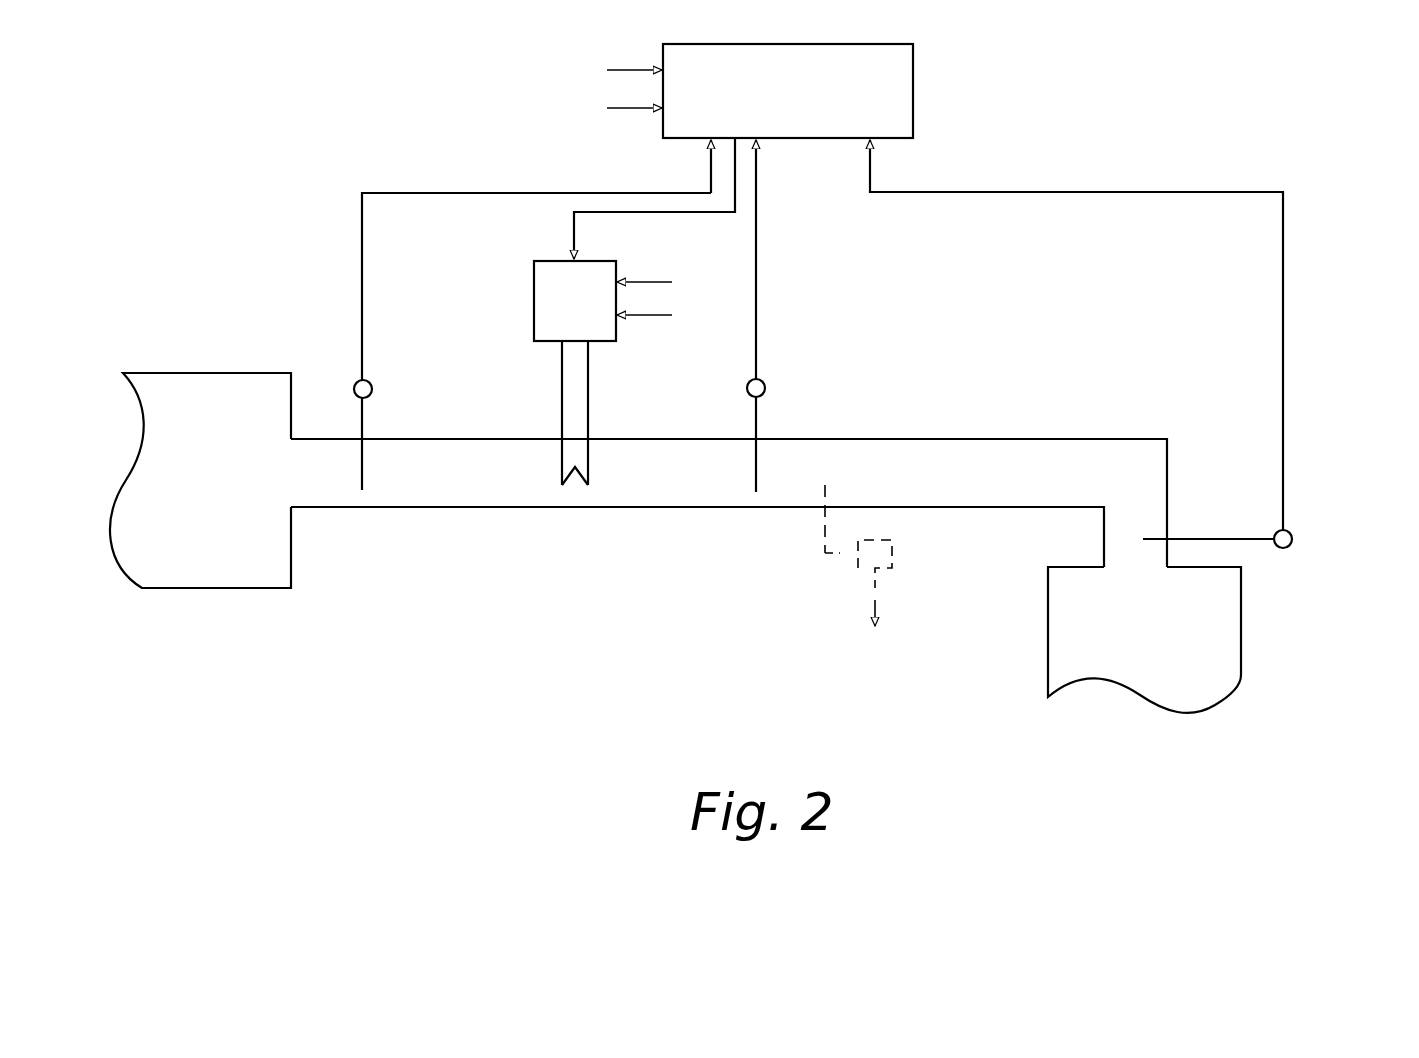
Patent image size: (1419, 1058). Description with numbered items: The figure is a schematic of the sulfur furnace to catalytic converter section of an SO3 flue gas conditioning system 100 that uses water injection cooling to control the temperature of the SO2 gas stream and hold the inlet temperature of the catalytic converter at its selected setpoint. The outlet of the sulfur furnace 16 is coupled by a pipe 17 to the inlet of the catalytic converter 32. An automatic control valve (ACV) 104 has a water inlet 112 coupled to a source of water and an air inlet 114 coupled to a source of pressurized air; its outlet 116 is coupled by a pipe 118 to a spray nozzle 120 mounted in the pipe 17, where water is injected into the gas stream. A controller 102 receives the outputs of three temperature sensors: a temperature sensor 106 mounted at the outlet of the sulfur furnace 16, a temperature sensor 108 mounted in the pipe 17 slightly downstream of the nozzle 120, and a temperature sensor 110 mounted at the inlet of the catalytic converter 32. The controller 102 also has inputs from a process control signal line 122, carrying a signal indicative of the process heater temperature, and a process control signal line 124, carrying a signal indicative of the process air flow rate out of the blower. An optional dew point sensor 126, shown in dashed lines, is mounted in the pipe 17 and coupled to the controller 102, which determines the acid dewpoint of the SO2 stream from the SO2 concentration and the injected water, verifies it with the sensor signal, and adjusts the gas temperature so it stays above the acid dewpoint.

The sulfur furnace 16 is at (189, 487).
The pipe 17 is at (729, 510).
The catalytic converter 32 is at (1120, 674).
The SO3 flue gas conditioning system 100 is at (638, 570).
The controller 102 is at (767, 116).
The automatic control valve (ACV) 104 is at (555, 327).
The temperature sensor 106 is at (410, 405).
The temperature sensor 108 is at (807, 405).
The temperature sensor 110 is at (1270, 556).
The water inlet 112 is at (669, 283).
The air inlet 114 is at (669, 316).
The outlet 116 is at (507, 413).
The pipe 118 is at (594, 370).
The spray nozzle 120 is at (597, 480).
The process control signal line 122 is at (611, 71).
The process control signal line 124 is at (611, 109).
The dew point sensor 126 is at (945, 565).